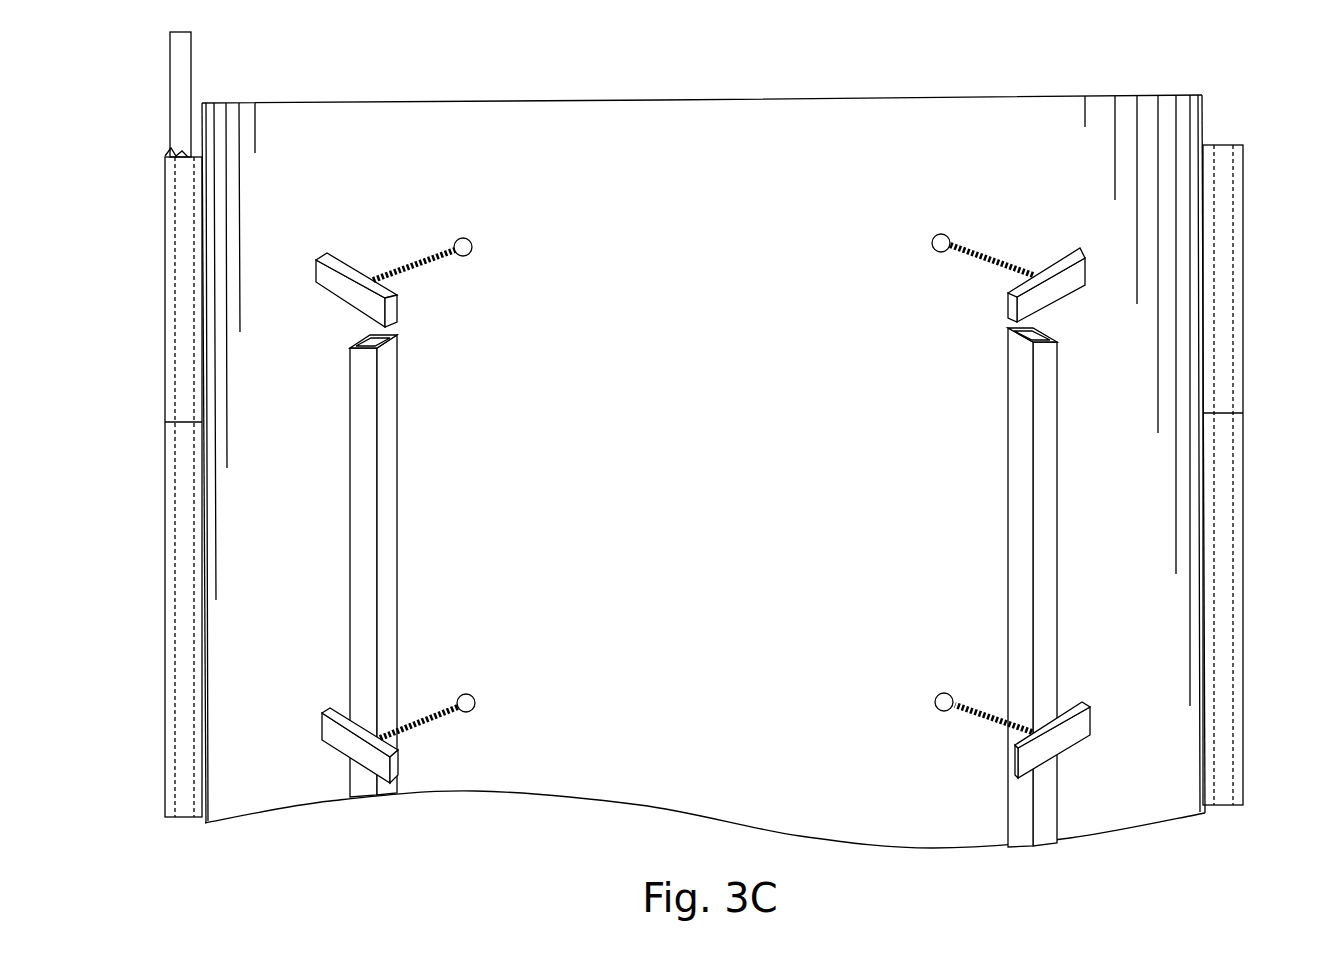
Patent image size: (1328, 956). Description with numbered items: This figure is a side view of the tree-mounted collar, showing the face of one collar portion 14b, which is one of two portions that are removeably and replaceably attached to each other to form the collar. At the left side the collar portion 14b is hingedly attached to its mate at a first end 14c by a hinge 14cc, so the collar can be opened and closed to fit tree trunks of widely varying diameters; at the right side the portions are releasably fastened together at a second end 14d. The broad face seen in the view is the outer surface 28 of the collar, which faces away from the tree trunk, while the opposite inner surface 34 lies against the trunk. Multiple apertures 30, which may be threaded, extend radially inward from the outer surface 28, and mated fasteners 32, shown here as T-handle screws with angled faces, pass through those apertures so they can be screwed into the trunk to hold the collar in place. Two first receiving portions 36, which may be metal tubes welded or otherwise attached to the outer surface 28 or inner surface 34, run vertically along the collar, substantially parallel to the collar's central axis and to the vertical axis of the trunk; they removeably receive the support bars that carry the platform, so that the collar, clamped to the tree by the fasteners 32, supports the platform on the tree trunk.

The outer surface 28 is at (658, 100).
The apertures 30 is at (463, 256).
The fasteners 32 is at (412, 264).
The inner surface 34 is at (703, 515).
The first receiving portions 36 is at (398, 460).
The collar portion 14b is at (593, 802).
The first end 14c is at (163, 403).
The hinge 14cc is at (170, 108).
The second end 14d is at (1245, 392).